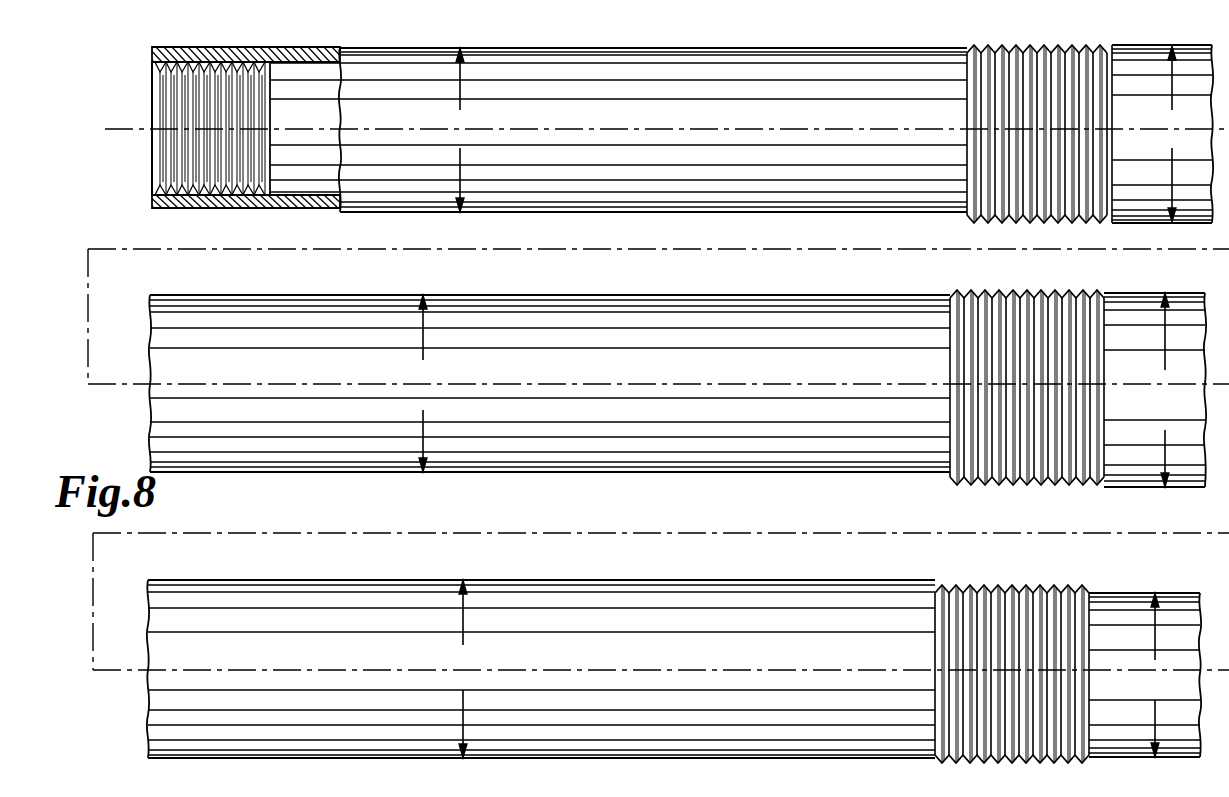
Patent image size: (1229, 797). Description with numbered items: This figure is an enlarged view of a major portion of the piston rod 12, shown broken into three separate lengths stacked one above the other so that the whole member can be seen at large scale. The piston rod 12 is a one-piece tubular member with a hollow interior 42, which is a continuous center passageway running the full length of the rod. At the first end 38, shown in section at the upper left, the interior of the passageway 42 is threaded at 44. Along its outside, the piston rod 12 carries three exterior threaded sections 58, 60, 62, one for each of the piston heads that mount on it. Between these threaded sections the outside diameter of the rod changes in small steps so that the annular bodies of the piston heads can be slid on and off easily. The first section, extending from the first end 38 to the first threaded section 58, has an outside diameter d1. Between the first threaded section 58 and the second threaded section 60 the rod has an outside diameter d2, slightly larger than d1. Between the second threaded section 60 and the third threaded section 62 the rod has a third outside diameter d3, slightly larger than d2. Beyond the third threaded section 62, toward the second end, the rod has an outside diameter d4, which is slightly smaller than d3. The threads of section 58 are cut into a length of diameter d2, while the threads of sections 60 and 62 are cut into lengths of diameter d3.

The piston rod 12 is at (688, 41).
The first end 38 is at (152, 100).
The hollow interior 42 is at (327, 83).
The threaded interior 44 is at (170, 172).
The first threaded section 58 is at (1001, 45).
The second threaded section 60 is at (991, 298).
The third threaded section 62 is at (1007, 590).
The first outside diameter d1 is at (460, 110).
The second outside diameter d2 is at (1173, 116).
The third outside diameter d3 is at (1166, 371).
The fourth outside diameter d4 is at (1152, 660).